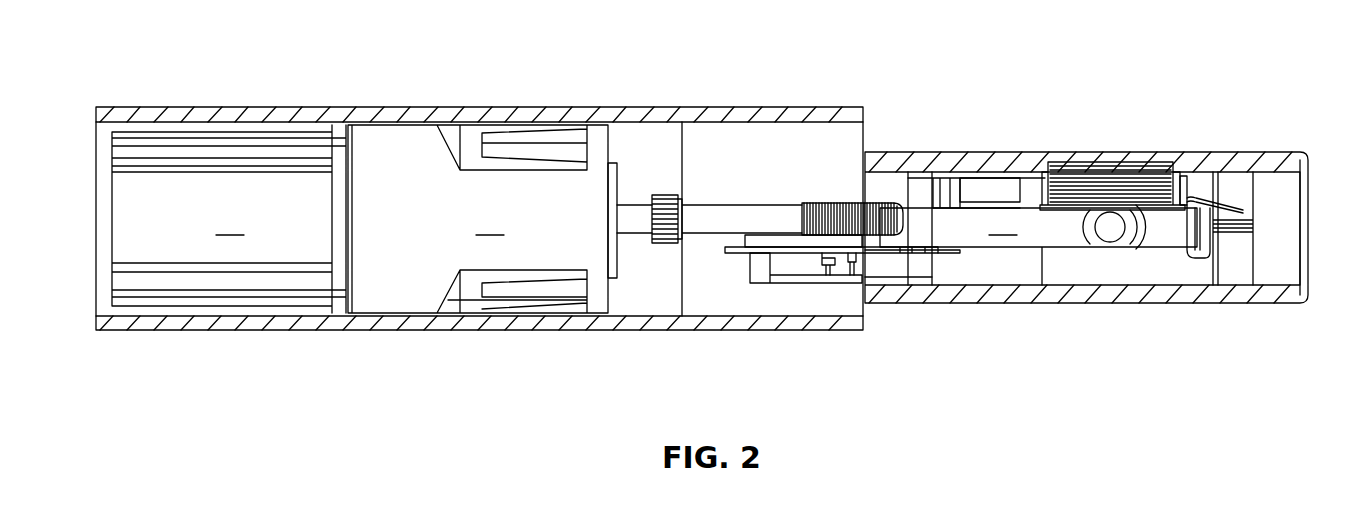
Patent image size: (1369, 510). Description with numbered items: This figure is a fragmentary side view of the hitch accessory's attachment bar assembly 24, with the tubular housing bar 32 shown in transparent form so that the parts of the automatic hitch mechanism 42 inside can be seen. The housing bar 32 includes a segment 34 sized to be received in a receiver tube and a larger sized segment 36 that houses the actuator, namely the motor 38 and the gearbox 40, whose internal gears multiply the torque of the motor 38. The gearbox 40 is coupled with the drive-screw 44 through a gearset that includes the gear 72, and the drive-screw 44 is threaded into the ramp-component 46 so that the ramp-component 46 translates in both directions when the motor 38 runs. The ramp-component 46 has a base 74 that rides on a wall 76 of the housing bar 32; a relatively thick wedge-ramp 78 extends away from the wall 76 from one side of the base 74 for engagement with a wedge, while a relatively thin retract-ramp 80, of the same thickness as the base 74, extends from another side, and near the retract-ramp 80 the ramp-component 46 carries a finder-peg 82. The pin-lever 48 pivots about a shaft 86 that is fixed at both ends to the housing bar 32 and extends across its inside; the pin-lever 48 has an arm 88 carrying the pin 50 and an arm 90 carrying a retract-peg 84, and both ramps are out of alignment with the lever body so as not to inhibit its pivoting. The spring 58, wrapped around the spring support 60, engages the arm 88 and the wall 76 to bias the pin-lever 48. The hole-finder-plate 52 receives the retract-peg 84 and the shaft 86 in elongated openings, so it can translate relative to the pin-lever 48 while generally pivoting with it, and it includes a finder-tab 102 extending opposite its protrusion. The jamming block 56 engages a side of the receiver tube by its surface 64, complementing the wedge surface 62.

The attachment bar assembly 24 is at (914, 78).
The housing bar 32 is at (350, 114).
The segment 34 is at (1285, 160).
The larger sized segment 36 is at (298, 331).
The motor 38 is at (229, 219).
The gearbox 40 is at (478, 219).
The automatic hitch mechanism 42 is at (882, 190).
The drive-screw 44 is at (735, 218).
The ramp-component 46 is at (985, 180).
The pin-lever 48 is at (1038, 244).
The pin 50 is at (1118, 226).
The hole-finder-plate 52 is at (735, 255).
The jamming block 56 is at (1150, 165).
The spring 58 is at (1255, 228).
The spring support 60 is at (1238, 198).
The surface 62 is at (1105, 160).
The surface 64 is at (1076, 165).
The gear 72 is at (662, 195).
The base 74 is at (990, 304).
The wall 76 is at (1095, 302).
The wedge-ramp 78 is at (1024, 166).
The retract-ramp 80 is at (897, 288).
The finder-peg 82 is at (830, 268).
The retract-peg 84 is at (760, 280).
The shaft 86 is at (922, 152).
The arm 88 is at (1188, 258).
The arm 90 is at (790, 243).
The finder-tab 102 is at (855, 270).